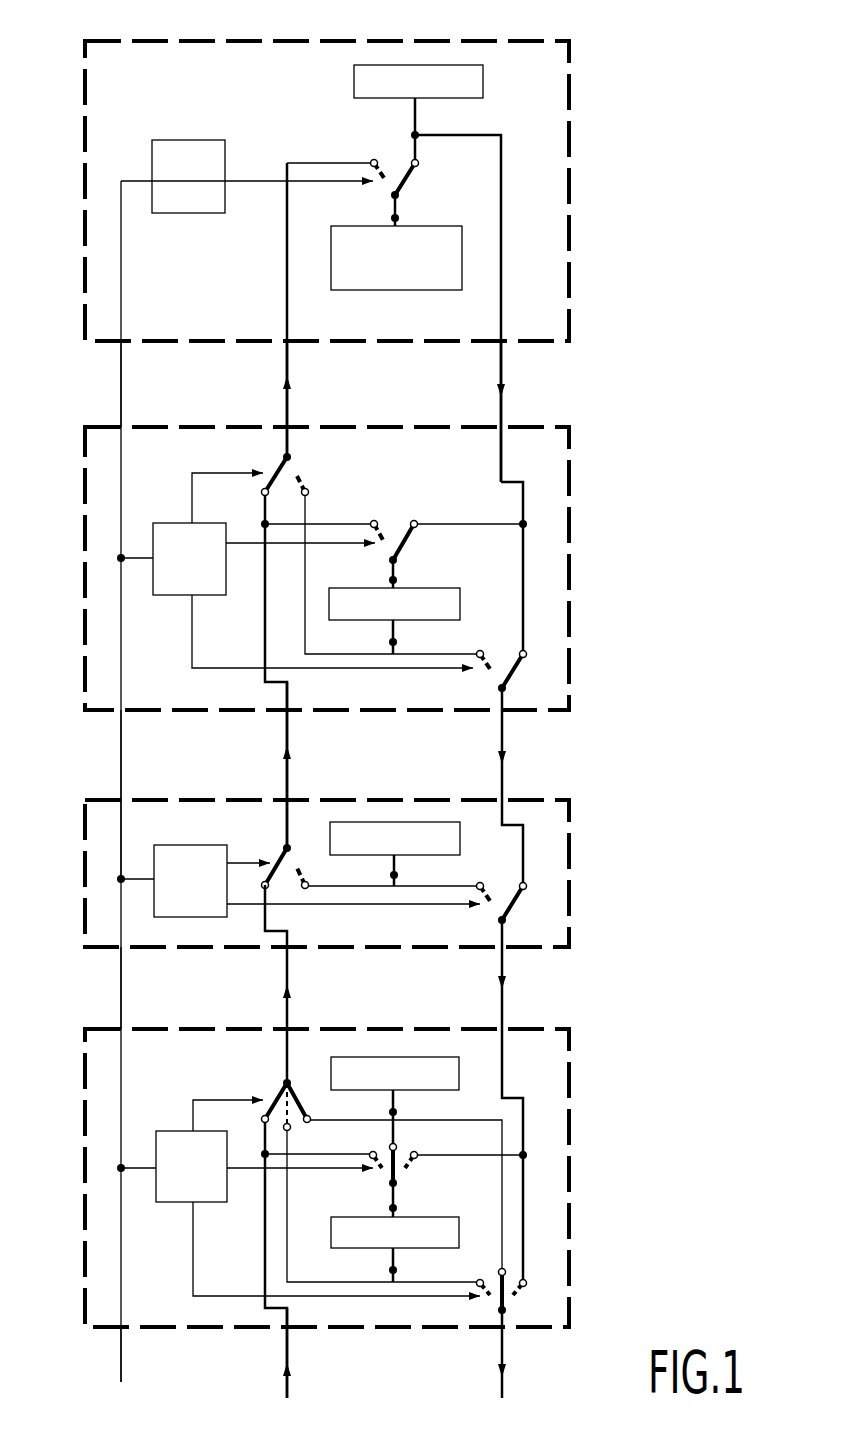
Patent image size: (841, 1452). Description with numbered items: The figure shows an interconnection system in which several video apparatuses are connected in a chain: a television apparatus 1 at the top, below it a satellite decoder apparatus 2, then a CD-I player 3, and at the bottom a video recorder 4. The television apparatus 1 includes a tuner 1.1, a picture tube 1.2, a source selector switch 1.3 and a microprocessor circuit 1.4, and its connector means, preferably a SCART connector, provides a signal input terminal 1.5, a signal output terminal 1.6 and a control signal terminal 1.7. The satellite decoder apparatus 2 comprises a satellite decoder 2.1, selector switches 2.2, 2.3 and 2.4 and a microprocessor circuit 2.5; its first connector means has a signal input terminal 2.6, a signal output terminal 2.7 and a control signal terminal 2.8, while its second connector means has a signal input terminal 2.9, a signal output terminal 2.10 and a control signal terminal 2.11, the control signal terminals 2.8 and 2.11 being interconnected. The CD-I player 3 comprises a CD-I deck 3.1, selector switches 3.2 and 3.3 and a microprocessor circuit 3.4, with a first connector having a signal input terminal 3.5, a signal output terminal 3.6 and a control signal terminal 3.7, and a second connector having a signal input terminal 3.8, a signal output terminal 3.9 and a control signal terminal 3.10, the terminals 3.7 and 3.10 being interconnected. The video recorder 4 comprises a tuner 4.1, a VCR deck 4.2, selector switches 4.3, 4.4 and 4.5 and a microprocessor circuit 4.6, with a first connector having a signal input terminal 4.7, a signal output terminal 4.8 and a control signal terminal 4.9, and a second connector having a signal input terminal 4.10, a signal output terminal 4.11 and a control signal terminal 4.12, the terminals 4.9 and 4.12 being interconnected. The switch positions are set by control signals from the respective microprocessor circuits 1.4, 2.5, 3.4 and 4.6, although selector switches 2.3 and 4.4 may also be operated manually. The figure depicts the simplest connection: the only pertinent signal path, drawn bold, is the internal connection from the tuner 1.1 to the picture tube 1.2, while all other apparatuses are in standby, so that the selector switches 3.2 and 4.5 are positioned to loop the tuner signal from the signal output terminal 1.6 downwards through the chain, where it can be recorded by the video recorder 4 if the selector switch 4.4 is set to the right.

The television apparatus 1 is at (570, 95).
The tuner 1.1 is at (485, 75).
The picture tube 1.2 is at (462, 237).
The source selector switch 1.3 is at (397, 177).
The microprocessor circuit 1.4 is at (208, 147).
The signal input terminal 1.5 is at (290, 355).
The signal output terminal 1.6 is at (506, 352).
The control signal terminal 1.7 is at (118, 347).
The satellite decoder apparatus 2 is at (570, 492).
The satellite decoder 2.1 is at (440, 587).
The selector switch 2.2 is at (298, 465).
The selector switch 2.3 is at (393, 540).
The selector switch 2.4 is at (503, 673).
The microprocessor circuit 2.5 is at (173, 530).
The signal input terminal 2.6 is at (504, 422).
The signal output terminal 2.7 is at (290, 422).
The control signal terminal 2.8 is at (123, 422).
The signal input terminal 2.9 is at (290, 718).
The signal output terminal 2.10 is at (505, 718).
The control signal terminal 2.11 is at (118, 713).
The CD-I player 3 is at (570, 845).
The CD-I deck 3.1 is at (408, 822).
The selector switch 3.2 is at (505, 897).
The selector switch 3.3 is at (288, 880).
The microprocessor circuit 3.4 is at (196, 845).
The signal input terminal 3.5 is at (505, 797).
The signal output terminal 3.6 is at (290, 797).
The control signal terminal 3.7 is at (118, 798).
The signal input terminal 3.8 is at (287, 950).
The signal output terminal 3.9 is at (505, 950).
The control signal terminal 3.10 is at (118, 950).
The video recorder 4 is at (570, 1072).
The tuner 4.1 is at (414, 1055).
The VCR deck 4.2 is at (417, 1217).
The selector switch 4.3 is at (275, 1092).
The selector switch 4.4 is at (380, 1176).
The selector switch 4.5 is at (518, 1302).
The microprocessor circuit 4.6 is at (177, 1192).
The signal input terminal 4.7 is at (504, 1027).
The signal output terminal 4.8 is at (291, 1027).
The control signal terminal 4.9 is at (123, 1027).
The signal input terminal 4.10 is at (290, 1333).
The signal output terminal 4.11 is at (500, 1333).
The control signal terminal 4.12 is at (125, 1330).